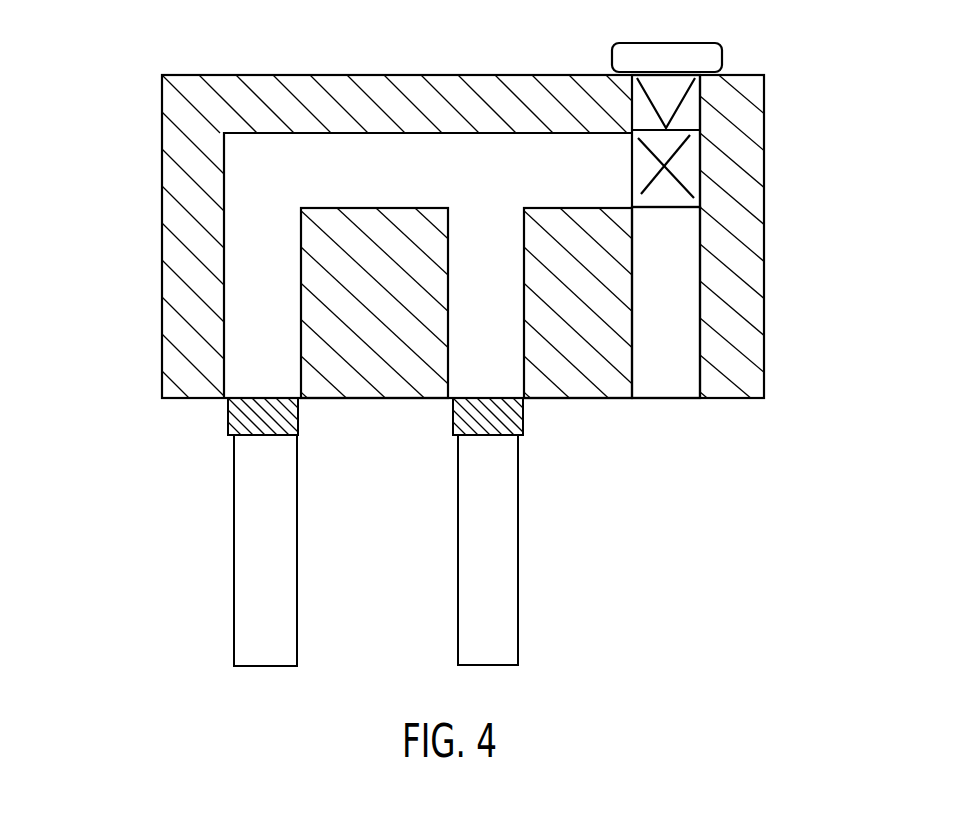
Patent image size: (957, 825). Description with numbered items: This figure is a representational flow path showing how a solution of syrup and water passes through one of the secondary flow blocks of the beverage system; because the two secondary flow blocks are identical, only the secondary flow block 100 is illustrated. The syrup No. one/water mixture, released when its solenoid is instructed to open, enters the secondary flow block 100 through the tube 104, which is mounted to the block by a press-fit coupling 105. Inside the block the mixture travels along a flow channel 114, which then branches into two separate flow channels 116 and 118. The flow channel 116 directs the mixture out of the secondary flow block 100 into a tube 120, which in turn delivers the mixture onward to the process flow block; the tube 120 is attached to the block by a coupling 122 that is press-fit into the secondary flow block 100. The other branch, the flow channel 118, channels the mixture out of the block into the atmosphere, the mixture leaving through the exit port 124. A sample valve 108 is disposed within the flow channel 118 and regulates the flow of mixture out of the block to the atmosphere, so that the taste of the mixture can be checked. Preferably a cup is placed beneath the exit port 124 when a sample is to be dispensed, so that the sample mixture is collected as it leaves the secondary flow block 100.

The secondary flow block 100 is at (173, 162).
The tube 104 is at (272, 566).
The press-fit coupling 105 is at (278, 424).
The sample valve 108 is at (688, 168).
The flow channel 114 is at (233, 303).
The flow channel 116 is at (463, 297).
The flow channel 118 is at (693, 298).
The tube 120 is at (495, 559).
The coupling 122 is at (493, 424).
The exit port 124 is at (677, 401).